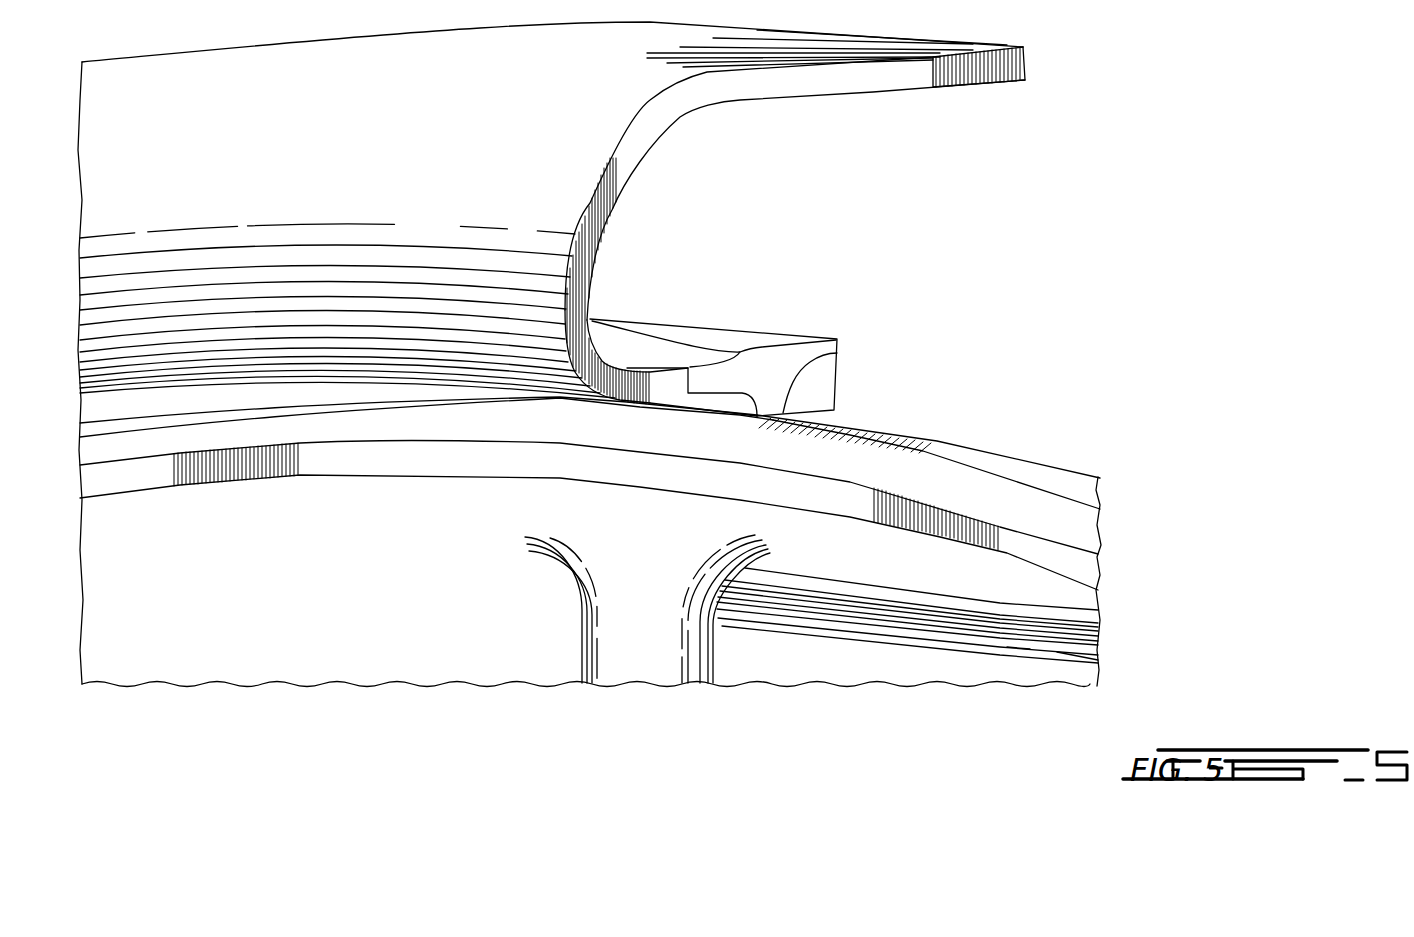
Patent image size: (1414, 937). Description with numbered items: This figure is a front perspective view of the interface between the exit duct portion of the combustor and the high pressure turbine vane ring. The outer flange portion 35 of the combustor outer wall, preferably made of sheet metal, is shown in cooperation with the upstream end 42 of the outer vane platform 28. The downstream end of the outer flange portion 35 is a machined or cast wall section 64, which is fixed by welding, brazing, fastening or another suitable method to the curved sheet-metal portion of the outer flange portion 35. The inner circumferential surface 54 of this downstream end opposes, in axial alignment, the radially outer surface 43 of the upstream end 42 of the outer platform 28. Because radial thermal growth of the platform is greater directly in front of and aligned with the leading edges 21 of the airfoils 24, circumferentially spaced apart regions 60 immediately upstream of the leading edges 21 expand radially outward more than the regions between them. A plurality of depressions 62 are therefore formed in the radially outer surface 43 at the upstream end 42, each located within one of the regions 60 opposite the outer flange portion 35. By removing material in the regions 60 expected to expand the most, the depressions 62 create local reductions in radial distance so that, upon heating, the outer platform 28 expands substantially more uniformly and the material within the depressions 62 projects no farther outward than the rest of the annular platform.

The outer flange portion 35 is at (608, 208).
The wall section 64 is at (788, 329).
The inner circumferential surface 54 is at (838, 355).
The depressions 62 is at (857, 423).
The radially outer surface 43 is at (930, 443).
The regions 60 is at (769, 427).
The outer vane platform 28 is at (1099, 571).
The upstream end 42 is at (408, 460).
The leading edges 21 is at (648, 645).
The airfoils 24 is at (848, 669).